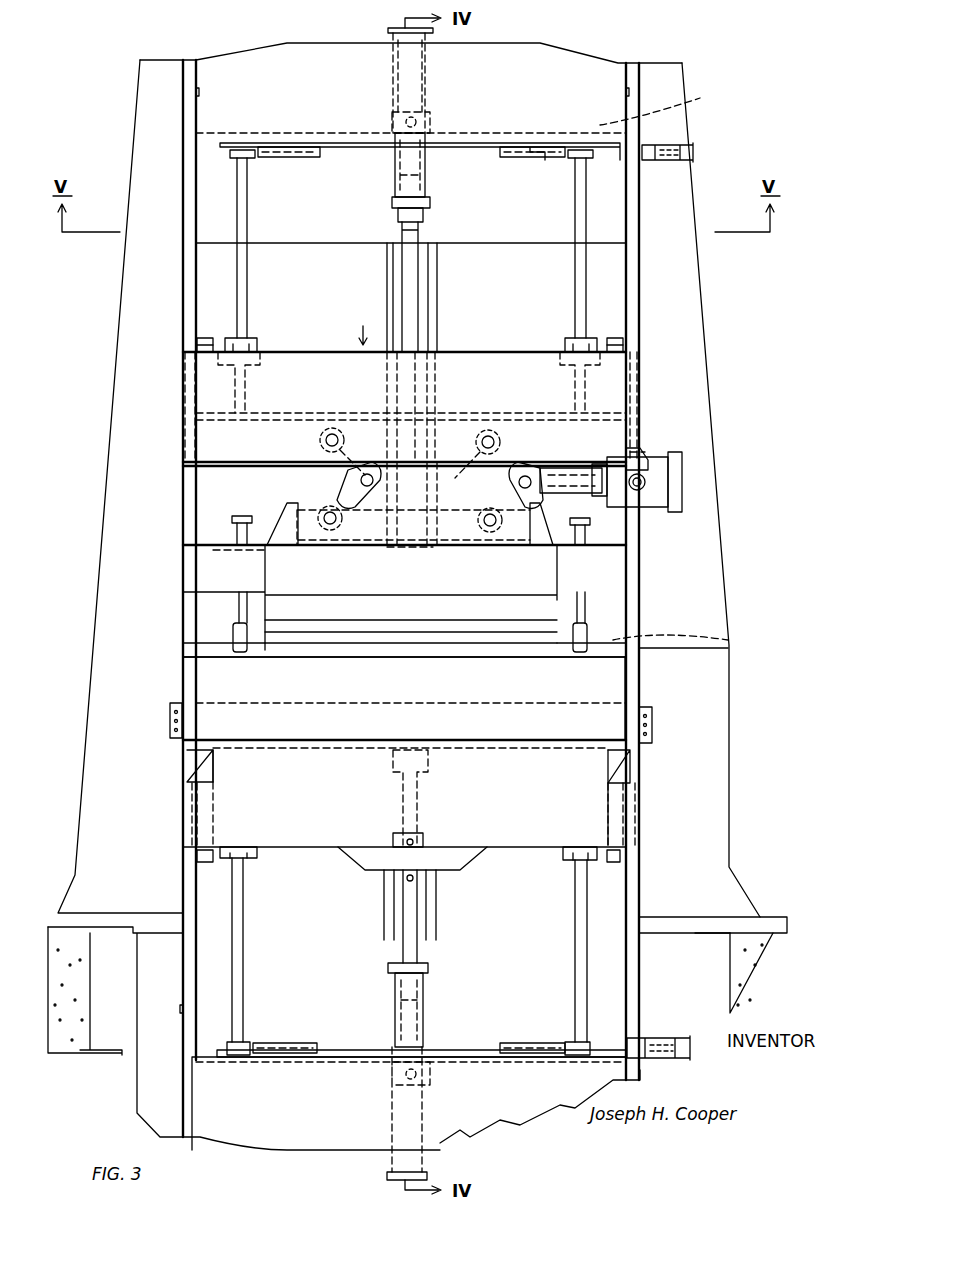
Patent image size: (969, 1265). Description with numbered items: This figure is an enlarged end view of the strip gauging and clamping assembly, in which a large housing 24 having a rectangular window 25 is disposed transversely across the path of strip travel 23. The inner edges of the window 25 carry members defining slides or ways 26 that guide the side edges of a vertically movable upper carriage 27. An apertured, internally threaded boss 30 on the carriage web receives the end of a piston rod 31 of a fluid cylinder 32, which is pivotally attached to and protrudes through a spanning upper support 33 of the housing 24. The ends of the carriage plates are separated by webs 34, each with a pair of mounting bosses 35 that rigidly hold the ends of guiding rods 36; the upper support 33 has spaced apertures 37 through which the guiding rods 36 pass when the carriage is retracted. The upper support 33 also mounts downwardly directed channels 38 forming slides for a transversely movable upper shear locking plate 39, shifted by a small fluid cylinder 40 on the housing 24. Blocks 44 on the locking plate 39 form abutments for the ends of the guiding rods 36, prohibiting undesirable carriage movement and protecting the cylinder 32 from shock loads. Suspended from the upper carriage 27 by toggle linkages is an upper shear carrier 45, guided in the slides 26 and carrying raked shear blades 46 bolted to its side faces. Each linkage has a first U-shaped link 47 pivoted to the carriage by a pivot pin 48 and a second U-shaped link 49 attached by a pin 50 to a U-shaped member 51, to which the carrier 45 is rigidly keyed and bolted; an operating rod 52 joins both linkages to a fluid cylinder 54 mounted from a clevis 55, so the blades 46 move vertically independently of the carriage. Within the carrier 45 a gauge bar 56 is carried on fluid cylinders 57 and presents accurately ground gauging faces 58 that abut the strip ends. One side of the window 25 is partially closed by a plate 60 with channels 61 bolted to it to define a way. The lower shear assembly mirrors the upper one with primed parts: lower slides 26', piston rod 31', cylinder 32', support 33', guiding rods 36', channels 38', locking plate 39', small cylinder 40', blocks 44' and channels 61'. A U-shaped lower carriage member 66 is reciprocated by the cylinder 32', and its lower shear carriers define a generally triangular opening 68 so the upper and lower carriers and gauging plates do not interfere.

The path of strip travel 23 is at (728, 645).
The housing 24 is at (145, 210).
The rectangular window 25 is at (203, 285).
The slides or ways 26 is at (409, 598).
The lower slides or ways 26' is at (342, 819).
The upper carriage 27 is at (363, 325).
The boss 30 is at (425, 413).
The piston rod 31 is at (445, 242).
The lower piston rod 31' is at (437, 958).
The fluid cylinder 32 is at (441, 80).
The lower fluid cylinder 32' is at (381, 1114).
The upper support 33 is at (411, 80).
The lower support 33' is at (408, 1119).
The webs 34 is at (262, 352).
The mounting bosses 35 is at (257, 342).
The guiding rods 36 is at (411, 248).
The lower guiding rods 36' is at (408, 944).
The apertures 37 is at (664, 104).
The channels 38 is at (411, 159).
The lower channels 38' is at (409, 1021).
The upper shear locking plate 39 is at (420, 157).
The lower shear locking plate 39' is at (421, 1023).
The small fluid cylinder 40 is at (691, 144).
The lower small fluid cylinder 40' is at (658, 1025).
The blocks 44 is at (423, 173).
The lower blocks 44' is at (397, 1022).
The upper shear carrier 45 is at (280, 578).
The raked shear blades 46 is at (500, 622).
The first U-shaped link 47 is at (345, 470).
The pivot pin 48 is at (320, 445).
The second U-shaped link 49 is at (350, 487).
The pin 50 is at (300, 503).
The U-shaped member 51 is at (275, 510).
The operating rod 52 is at (540, 485).
The fluid cylinder 54 is at (670, 488).
The clevis 55 is at (650, 465).
The gauge bar 56 is at (233, 630).
The fluid cylinders 57 is at (232, 522).
The gauging faces 58 is at (290, 650).
The plate 60 is at (530, 262).
The channels 61 is at (407, 273).
The lower channels 61' is at (435, 909).
The lower carriage member 66 is at (580, 810).
The triangular opening 68 is at (612, 690).